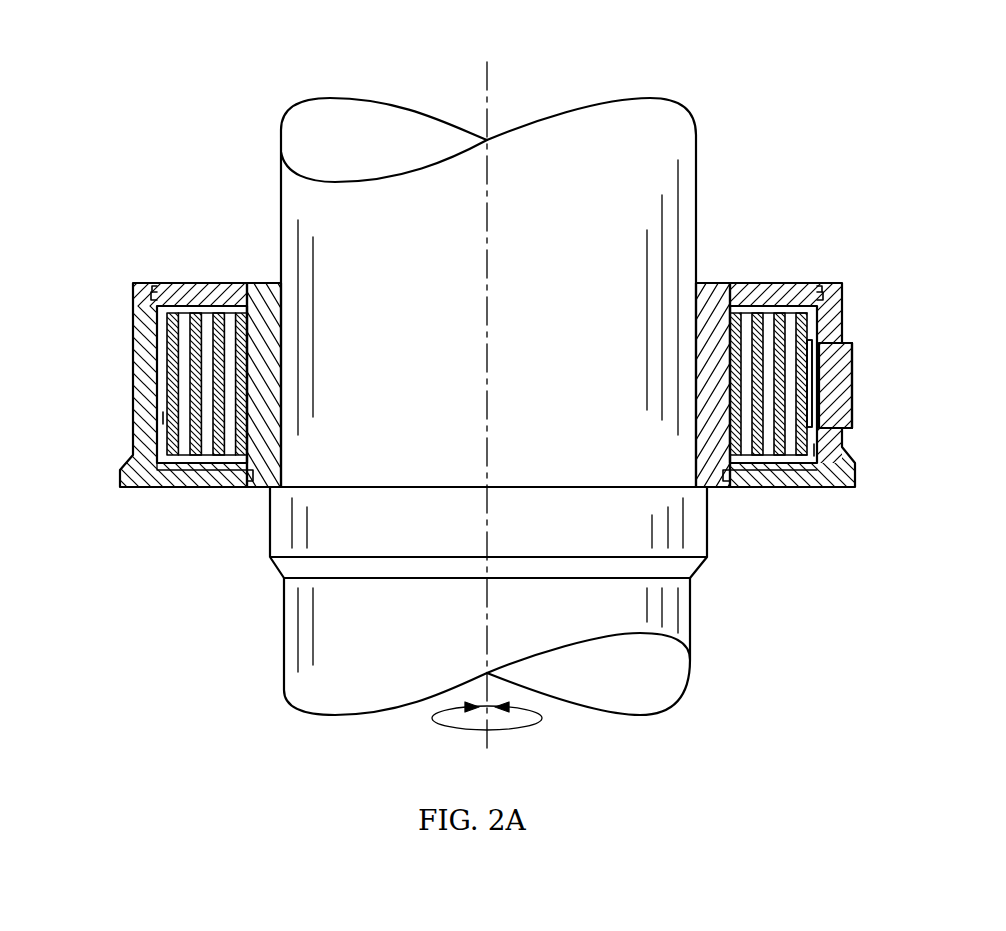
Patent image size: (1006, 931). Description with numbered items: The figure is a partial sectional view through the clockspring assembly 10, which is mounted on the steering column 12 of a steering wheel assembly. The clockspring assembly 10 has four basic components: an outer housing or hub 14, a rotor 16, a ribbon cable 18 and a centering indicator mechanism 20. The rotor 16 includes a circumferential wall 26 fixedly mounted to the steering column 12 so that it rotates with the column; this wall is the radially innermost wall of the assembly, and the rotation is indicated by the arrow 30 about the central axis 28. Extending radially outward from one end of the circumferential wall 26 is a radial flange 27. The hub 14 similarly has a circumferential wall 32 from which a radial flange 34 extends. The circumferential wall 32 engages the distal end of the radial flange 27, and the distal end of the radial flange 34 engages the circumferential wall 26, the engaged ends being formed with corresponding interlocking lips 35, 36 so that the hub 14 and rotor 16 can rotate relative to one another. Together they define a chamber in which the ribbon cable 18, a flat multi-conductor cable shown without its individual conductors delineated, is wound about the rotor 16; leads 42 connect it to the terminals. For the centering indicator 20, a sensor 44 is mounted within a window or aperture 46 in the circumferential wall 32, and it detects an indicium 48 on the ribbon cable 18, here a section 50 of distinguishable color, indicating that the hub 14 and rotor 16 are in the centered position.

The clockspring assembly 10 is at (915, 152).
The steering column 12 is at (652, 172).
The hub 14 is at (163, 284).
The rotor 16 is at (253, 284).
The ribbon cable 18 is at (195, 342).
The centering indicator mechanism 20 is at (856, 413).
The circumferential wall 26 is at (262, 440).
The radial flange 27 is at (221, 292).
The rotation axis 28 is at (487, 752).
The rotation 30 is at (542, 718).
The circumferential wall 32 is at (145, 390).
The radial flange 34 is at (157, 478).
The interlocking lip 35 is at (155, 298).
The interlocking lip 36 is at (155, 292).
The lead wire 42 is at (162, 418).
The sensor 44 is at (854, 392).
The window or aperture 46 is at (845, 365).
The indicium 48 is at (815, 345).
The section 50 is at (809, 383).